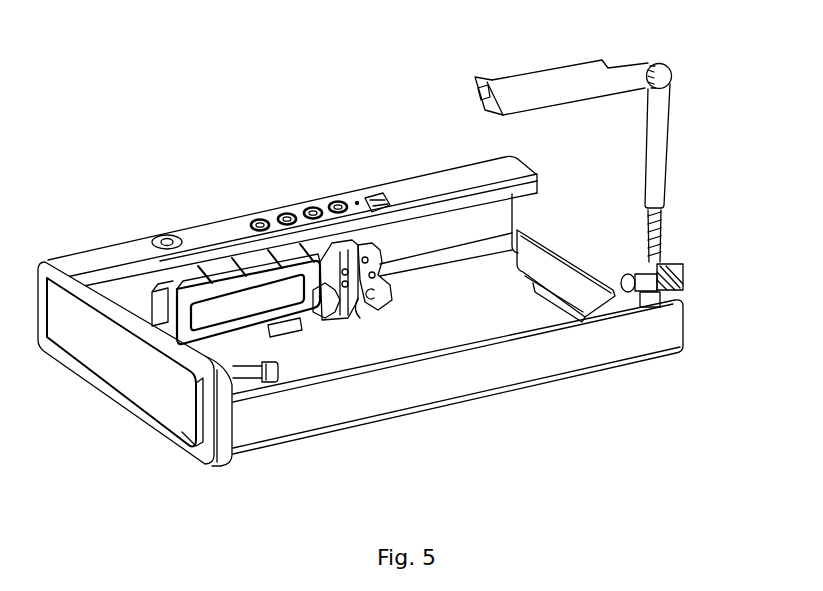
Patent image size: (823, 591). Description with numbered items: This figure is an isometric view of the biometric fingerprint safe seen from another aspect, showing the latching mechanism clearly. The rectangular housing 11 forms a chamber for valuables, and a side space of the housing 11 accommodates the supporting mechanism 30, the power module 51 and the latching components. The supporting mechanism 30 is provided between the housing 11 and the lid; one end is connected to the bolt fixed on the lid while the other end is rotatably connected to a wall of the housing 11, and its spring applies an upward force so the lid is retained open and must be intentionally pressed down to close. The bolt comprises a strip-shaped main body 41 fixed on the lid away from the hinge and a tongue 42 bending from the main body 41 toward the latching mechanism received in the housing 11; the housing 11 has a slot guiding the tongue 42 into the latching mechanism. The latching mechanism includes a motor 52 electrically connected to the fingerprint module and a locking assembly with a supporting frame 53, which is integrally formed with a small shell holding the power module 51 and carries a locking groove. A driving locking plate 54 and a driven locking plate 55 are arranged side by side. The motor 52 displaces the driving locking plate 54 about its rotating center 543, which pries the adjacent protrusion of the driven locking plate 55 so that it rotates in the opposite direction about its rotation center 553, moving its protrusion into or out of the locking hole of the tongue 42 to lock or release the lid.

The housing 11 is at (360, 311).
The supporting mechanism 30 is at (666, 157).
The main body 41 is at (540, 73).
The tongue 42 is at (478, 75).
The power module 51 is at (236, 302).
The motor 52 is at (342, 310).
The supporting frame 53 is at (371, 194).
The driving locking plate 54 is at (347, 242).
The driven locking plate 55 is at (385, 256).
The rotating center 543 is at (357, 298).
The rotation center 553 is at (388, 284).